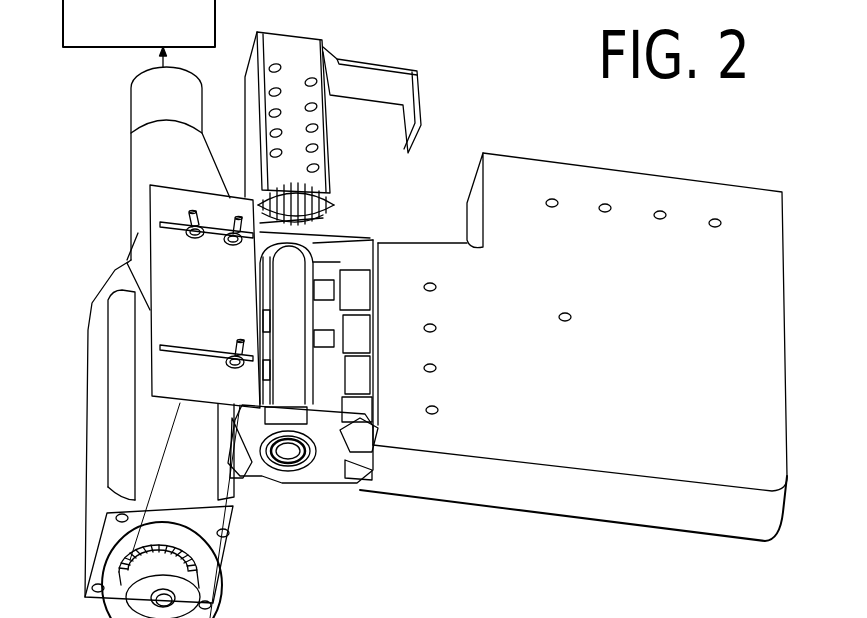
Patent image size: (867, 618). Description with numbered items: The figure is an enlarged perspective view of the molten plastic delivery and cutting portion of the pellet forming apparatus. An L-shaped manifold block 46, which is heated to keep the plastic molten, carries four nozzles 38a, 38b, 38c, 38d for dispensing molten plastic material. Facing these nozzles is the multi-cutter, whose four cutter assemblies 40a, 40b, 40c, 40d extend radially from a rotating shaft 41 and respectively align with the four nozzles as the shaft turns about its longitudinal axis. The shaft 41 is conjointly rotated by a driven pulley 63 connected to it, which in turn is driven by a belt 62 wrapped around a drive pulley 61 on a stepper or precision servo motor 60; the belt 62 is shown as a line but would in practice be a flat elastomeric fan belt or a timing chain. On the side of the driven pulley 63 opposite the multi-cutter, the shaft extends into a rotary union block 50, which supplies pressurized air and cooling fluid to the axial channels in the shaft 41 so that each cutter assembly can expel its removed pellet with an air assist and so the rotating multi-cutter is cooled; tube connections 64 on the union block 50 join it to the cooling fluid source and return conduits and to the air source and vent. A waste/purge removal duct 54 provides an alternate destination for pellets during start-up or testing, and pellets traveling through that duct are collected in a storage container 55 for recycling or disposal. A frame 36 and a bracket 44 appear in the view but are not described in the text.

The frame 36 is at (362, 311).
The nozzle 38a is at (358, 293).
The nozzle 38b is at (358, 335).
The nozzle 38c is at (356, 381).
The nozzle 38d is at (375, 409).
The cutter assembly 40a is at (330, 285).
The cutter assembly 40b is at (327, 336).
The cutter assembly 40c is at (372, 456).
The cutter assembly 40d is at (365, 478).
The shaft 41 is at (291, 457).
The bracket 44 is at (380, 430).
The L-shaped manifold block 46 is at (518, 148).
The rotary union block 50 is at (245, 135).
The waste/purge removal duct 54 is at (127, 185).
The storage container 55 is at (199, 18).
The motor 60 is at (103, 425).
The drive pulley 61 is at (165, 560).
The belt 62 is at (243, 485).
The driven pulley 63 is at (334, 207).
The tube connections 64 is at (286, 60).